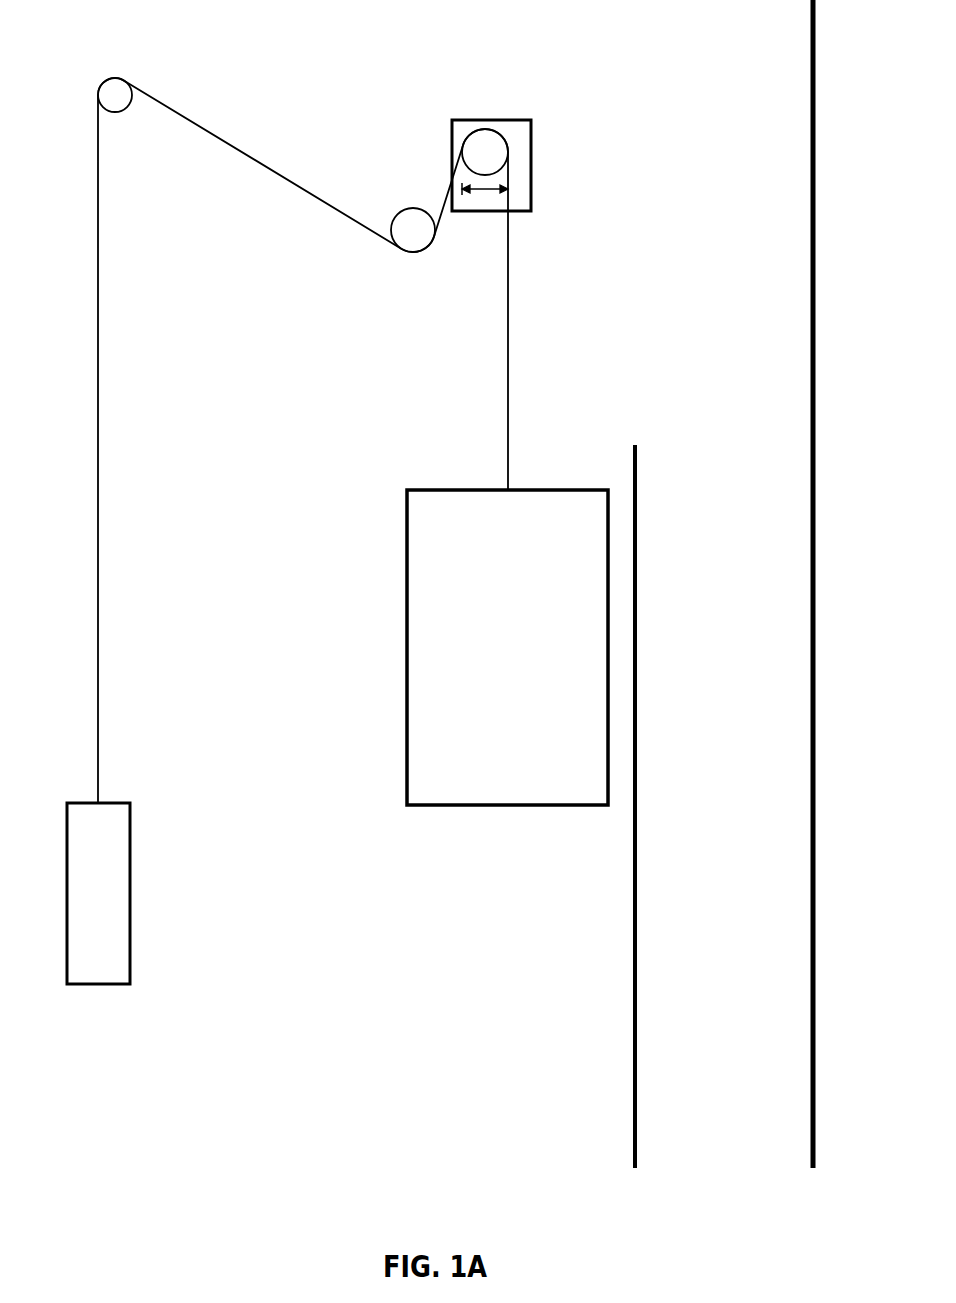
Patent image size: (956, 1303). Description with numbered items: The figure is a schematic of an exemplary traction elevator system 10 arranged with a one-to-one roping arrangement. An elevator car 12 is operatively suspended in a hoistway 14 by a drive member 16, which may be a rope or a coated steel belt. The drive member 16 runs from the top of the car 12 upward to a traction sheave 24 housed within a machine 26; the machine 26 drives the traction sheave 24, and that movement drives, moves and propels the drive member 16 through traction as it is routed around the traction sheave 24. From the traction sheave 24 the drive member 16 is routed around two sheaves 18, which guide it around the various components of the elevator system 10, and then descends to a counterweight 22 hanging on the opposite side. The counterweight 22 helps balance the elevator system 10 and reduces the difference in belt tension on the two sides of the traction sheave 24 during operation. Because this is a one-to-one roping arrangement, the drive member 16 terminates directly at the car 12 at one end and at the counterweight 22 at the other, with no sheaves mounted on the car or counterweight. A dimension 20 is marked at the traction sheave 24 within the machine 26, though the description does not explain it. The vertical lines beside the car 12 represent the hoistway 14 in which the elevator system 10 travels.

The elevator system 10 is at (651, 73).
The elevator car 12 is at (523, 662).
The hoistway 14 is at (637, 695).
The drive member 16 is at (292, 185).
The sheave 18 is at (110, 78).
The displacement 20 is at (487, 193).
The counterweight 22 is at (113, 908).
The traction sheave 24 is at (498, 125).
The machine 26 is at (472, 120).